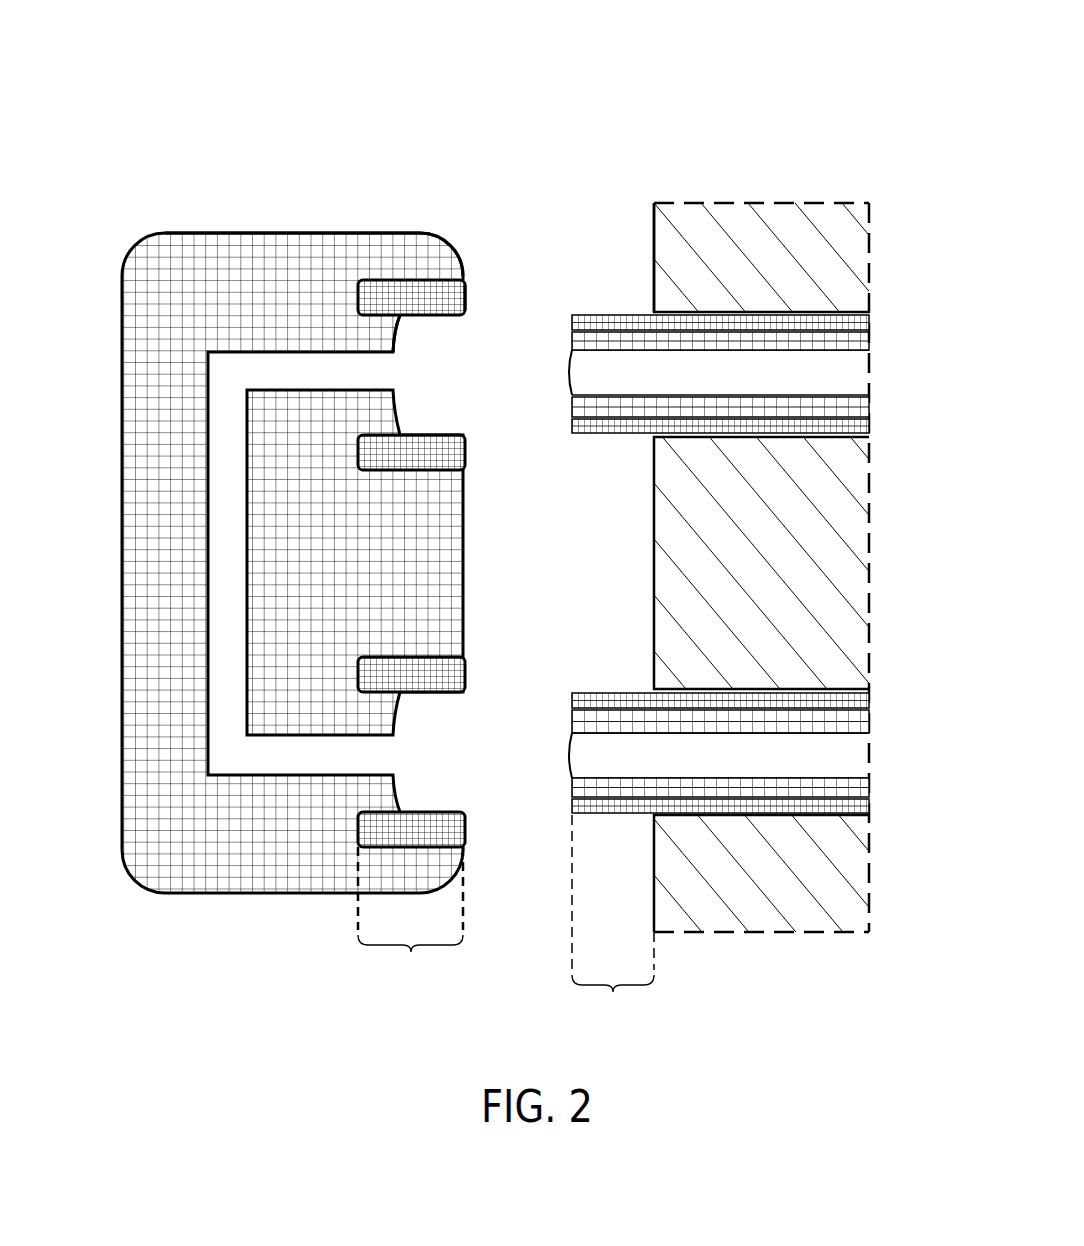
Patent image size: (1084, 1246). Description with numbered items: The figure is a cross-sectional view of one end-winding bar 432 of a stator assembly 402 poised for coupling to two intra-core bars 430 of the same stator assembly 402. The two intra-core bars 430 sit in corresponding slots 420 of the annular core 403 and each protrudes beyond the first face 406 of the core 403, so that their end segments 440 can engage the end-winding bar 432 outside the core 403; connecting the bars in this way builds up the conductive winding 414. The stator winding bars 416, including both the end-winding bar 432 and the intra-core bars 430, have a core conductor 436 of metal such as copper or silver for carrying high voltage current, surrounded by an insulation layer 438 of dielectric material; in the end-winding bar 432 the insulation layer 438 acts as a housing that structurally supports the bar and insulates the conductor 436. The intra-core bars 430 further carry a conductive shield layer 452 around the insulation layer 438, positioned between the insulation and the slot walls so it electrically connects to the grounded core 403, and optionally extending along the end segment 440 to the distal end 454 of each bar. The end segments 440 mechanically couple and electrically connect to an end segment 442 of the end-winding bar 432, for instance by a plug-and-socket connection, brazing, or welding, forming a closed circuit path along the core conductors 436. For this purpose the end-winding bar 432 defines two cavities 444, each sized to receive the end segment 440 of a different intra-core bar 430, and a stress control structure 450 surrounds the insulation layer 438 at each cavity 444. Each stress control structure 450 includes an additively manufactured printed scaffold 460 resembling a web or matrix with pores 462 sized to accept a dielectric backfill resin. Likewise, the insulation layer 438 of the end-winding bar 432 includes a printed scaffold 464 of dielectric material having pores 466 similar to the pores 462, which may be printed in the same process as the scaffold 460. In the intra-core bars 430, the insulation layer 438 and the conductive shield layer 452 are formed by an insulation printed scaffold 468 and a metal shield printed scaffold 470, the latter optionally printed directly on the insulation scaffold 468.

The stator assembly 402 is at (477, 72).
The annular core 403 is at (757, 218).
The first face 406 is at (654, 240).
The conductive winding 414 is at (570, 290).
The stator winding bars 416 is at (167, 233).
The slots 420 is at (740, 310).
The intra-core bars 430 is at (607, 315).
The end-winding bar 432 is at (233, 233).
The core conductor 436 is at (217, 432).
The insulation layer 438 is at (357, 335).
The end segment 440 is at (613, 939).
The end segment 442 is at (410, 933).
The cavities 444 is at (458, 412).
The stress control structure 450 is at (403, 290).
The conductive shield layer 452 is at (768, 325).
The distal end 454 is at (565, 750).
The printed scaffold 460 is at (465, 278).
The pores 462 is at (453, 300).
The printed scaffold 464 is at (378, 321).
The pores 466 is at (390, 345).
The insulation printed scaffold 468 is at (830, 410).
The shield printed scaffold 470 is at (845, 428).